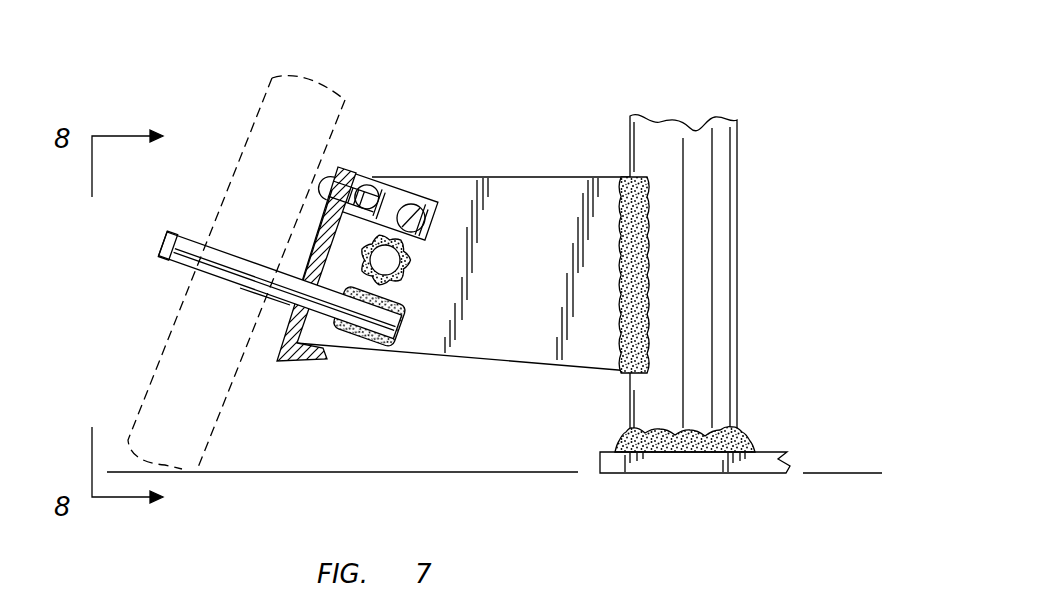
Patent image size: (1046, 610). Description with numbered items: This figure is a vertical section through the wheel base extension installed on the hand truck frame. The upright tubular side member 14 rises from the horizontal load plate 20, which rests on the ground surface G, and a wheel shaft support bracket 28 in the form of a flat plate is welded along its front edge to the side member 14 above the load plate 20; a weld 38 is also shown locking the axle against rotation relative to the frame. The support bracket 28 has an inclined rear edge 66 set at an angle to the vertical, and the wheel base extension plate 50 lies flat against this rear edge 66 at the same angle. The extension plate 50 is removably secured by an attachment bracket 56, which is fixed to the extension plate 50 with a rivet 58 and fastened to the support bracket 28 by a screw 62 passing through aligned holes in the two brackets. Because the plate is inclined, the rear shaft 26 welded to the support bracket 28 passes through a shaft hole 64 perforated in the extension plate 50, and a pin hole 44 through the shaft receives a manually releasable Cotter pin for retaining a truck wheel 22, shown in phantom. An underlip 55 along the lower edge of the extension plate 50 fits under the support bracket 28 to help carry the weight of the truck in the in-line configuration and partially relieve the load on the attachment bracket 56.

The vertical side member 14 is at (737, 231).
The load plate 20 is at (781, 450).
The truck wheel 22 is at (248, 135).
The rear shaft 26 is at (243, 272).
The wheel shaft support bracket 28 is at (583, 184).
The weld 38 is at (408, 268).
The pin hole 44 is at (188, 226).
The wheel base extension plate 50 is at (303, 235).
The underlip 55 is at (308, 362).
The attachment bracket 56 is at (397, 200).
The rivet 58 is at (388, 186).
The screw 62 is at (430, 221).
The shaft hole 64 is at (262, 297).
The rear edge 66 is at (302, 250).
The ground surface G is at (482, 472).